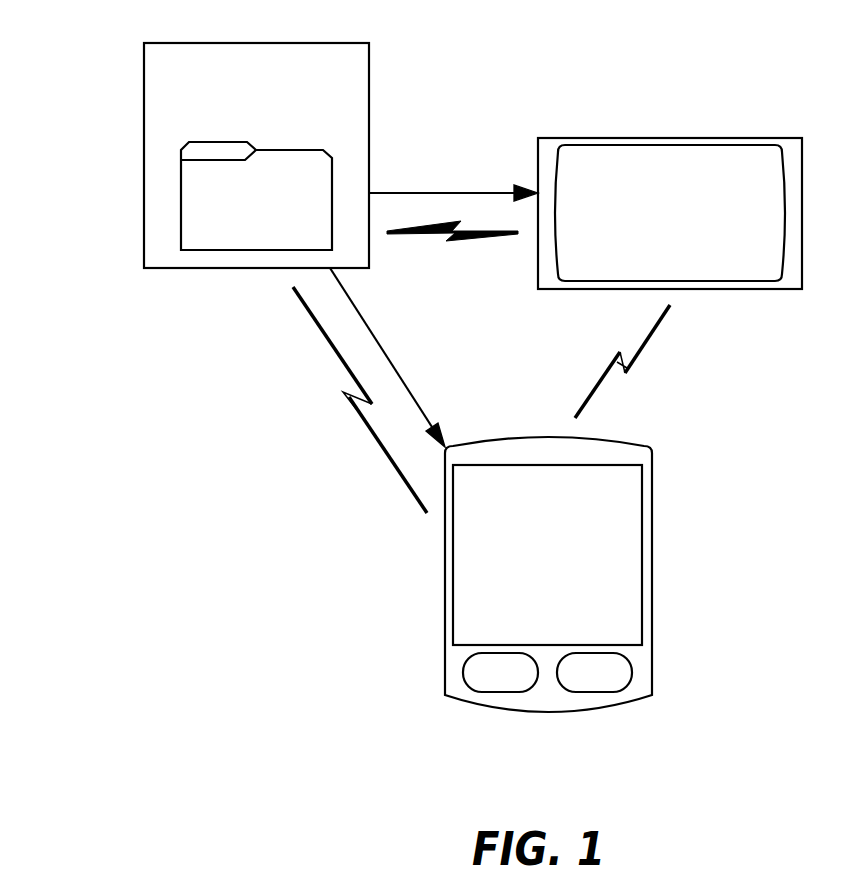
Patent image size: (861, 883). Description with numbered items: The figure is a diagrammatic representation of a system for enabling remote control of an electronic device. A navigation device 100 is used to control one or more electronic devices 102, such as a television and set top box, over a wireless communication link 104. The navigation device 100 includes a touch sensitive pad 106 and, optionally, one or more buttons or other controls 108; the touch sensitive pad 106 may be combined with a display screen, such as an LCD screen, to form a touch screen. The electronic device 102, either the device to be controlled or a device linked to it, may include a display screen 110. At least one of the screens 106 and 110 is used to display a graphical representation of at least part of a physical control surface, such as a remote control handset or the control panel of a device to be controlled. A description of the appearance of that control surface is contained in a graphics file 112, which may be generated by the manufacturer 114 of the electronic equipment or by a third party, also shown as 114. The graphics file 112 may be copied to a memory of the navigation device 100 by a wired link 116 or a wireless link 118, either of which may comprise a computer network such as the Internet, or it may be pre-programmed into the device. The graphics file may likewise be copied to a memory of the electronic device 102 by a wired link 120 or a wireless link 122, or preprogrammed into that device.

The navigation device 100 is at (518, 713).
The electronic device 102 is at (630, 138).
The wireless communication link 104 is at (600, 380).
The touch sensitive pad 106 is at (450, 570).
The buttons or other controls 108 is at (463, 672).
The display screen 110 is at (723, 145).
The graphics file 112 is at (181, 193).
The manufacturer or third party 114 is at (237, 43).
The wired link 116 is at (378, 342).
The wireless link 118 is at (377, 437).
The wired link 120 is at (480, 193).
The wireless link 122 is at (451, 240).